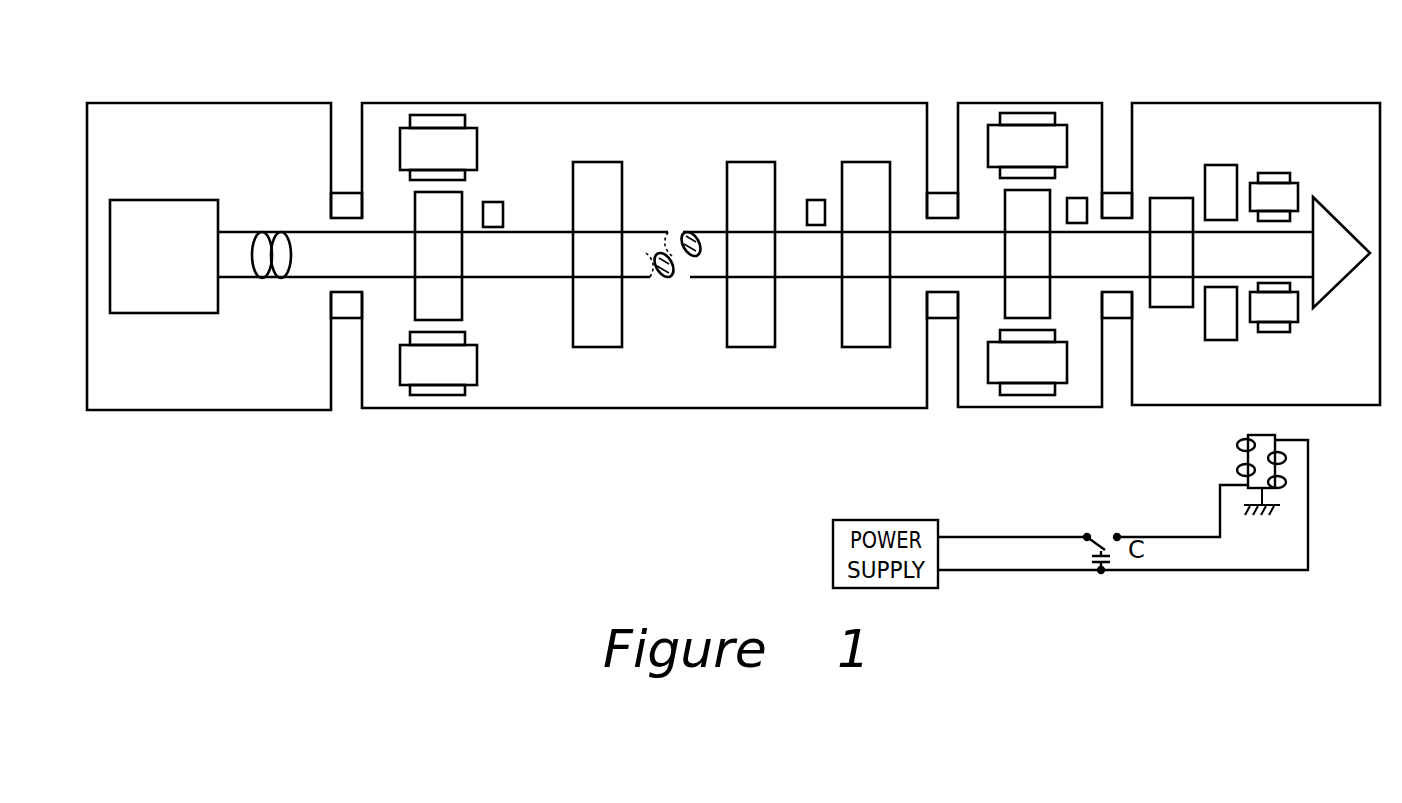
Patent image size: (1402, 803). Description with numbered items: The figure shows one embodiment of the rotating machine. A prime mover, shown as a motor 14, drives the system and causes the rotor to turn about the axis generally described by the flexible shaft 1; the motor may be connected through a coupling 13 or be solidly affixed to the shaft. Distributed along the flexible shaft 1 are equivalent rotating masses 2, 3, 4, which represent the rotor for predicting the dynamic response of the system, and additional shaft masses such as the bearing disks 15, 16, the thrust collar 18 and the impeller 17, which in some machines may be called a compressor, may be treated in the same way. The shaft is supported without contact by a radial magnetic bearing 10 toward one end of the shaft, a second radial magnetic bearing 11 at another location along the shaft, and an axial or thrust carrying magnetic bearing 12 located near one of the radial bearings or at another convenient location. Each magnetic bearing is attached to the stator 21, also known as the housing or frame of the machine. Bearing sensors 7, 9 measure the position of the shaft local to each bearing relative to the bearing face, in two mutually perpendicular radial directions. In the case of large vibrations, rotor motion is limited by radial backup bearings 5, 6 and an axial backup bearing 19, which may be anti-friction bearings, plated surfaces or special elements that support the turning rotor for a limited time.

The flexible shaft 1 is at (523, 277).
The equivalent rotating mass 2 is at (596, 170).
The equivalent rotating mass 3 is at (733, 193).
The equivalent rotating mass 4 is at (860, 172).
The radial backup bearing 5 is at (345, 193).
The radial backup bearing 6 is at (940, 193).
The bearing sensor 7 is at (820, 200).
The bearing sensor 9 is at (503, 212).
The radial magnetic bearing 10 is at (432, 395).
The second radial magnetic bearing 11 is at (1023, 113).
The axial or thrust carrying magnetic bearing 12 is at (1273, 178).
The coupling 13 is at (268, 242).
The motor 14 is at (157, 208).
The bearing disk 15 is at (424, 223).
The bearing disk 16 is at (1077, 198).
The impeller 17 is at (1335, 228).
The thrust collar 18 is at (1218, 177).
The axial backup bearing 19 is at (1117, 193).
The stator 21 is at (790, 100).